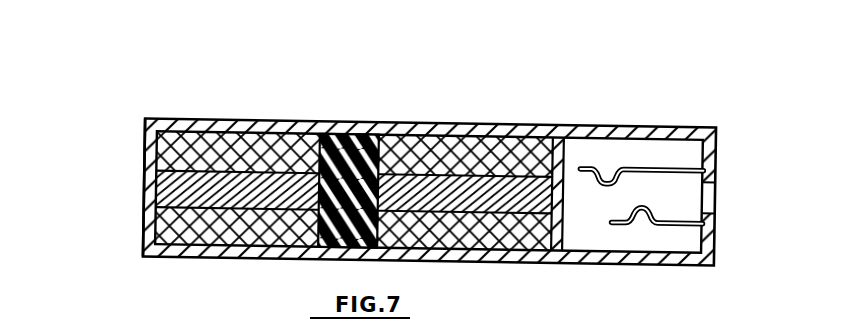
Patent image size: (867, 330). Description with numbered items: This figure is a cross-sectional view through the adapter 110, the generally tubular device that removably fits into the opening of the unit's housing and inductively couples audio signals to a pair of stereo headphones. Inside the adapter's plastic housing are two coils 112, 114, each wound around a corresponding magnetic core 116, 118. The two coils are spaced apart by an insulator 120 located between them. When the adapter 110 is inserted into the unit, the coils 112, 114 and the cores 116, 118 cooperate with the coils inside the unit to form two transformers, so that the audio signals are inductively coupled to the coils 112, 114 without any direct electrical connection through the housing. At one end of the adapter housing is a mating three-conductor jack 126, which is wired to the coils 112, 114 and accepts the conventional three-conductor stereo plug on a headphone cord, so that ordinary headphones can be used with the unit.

The adapter 110 is at (222, 260).
The coil 112 is at (233, 123).
The coil 114 is at (456, 135).
The magnetic core 116 is at (148, 172).
The magnetic core 118 is at (507, 172).
The insulator 120 is at (342, 124).
The three-conductor jack 126 is at (660, 192).